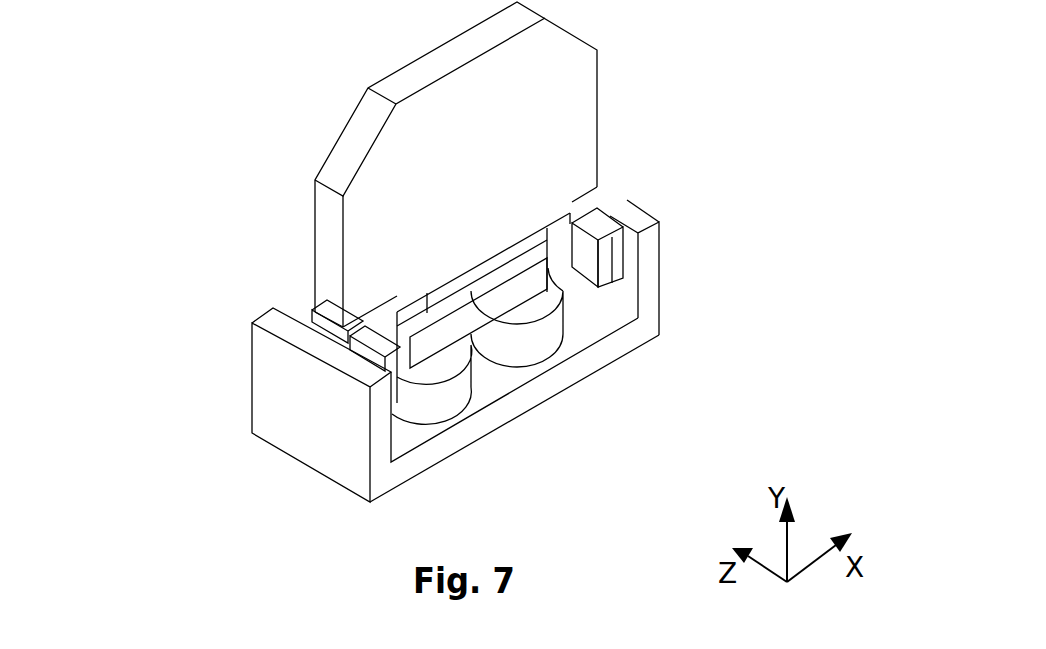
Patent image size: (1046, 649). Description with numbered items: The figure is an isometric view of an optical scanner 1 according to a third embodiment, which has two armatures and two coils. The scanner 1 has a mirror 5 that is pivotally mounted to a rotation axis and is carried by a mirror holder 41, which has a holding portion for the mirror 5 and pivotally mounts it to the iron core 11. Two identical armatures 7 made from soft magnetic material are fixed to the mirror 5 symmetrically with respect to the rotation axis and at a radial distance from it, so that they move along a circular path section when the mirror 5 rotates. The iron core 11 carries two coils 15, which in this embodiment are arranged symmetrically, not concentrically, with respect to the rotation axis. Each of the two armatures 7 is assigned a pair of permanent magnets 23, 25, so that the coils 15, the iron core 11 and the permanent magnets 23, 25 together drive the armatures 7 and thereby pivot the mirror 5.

The optical scanner device 1 is at (250, 63).
The mirror 5 is at (539, 163).
The armature 7 is at (458, 231).
The iron core 11 is at (518, 351).
The coil 15 is at (437, 385).
The permanent magnet 23 is at (240, 420).
The permanent magnet 25 is at (467, 289).
The mirror holder 41 is at (591, 193).